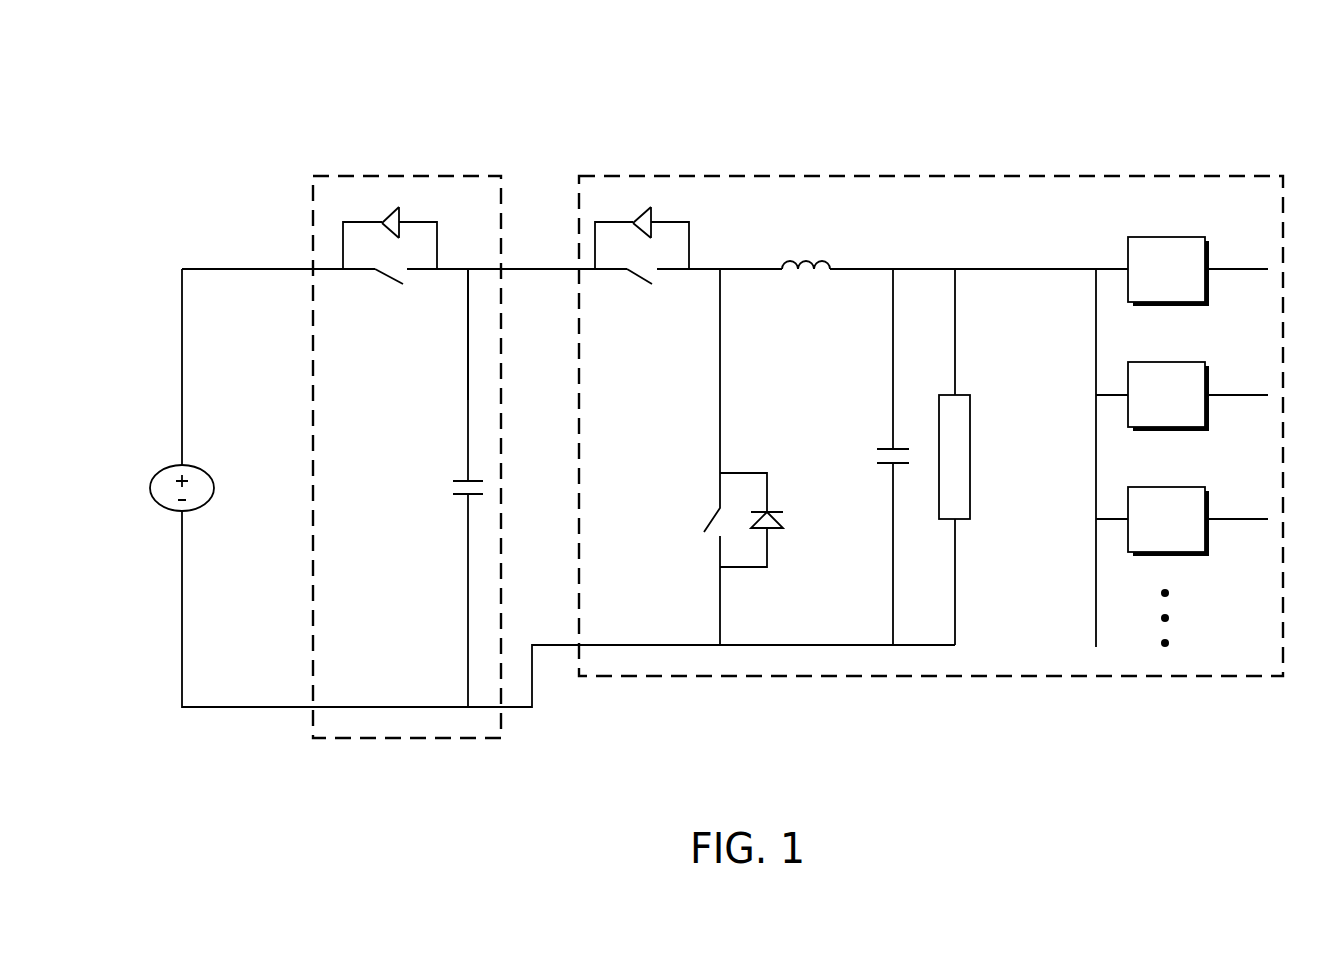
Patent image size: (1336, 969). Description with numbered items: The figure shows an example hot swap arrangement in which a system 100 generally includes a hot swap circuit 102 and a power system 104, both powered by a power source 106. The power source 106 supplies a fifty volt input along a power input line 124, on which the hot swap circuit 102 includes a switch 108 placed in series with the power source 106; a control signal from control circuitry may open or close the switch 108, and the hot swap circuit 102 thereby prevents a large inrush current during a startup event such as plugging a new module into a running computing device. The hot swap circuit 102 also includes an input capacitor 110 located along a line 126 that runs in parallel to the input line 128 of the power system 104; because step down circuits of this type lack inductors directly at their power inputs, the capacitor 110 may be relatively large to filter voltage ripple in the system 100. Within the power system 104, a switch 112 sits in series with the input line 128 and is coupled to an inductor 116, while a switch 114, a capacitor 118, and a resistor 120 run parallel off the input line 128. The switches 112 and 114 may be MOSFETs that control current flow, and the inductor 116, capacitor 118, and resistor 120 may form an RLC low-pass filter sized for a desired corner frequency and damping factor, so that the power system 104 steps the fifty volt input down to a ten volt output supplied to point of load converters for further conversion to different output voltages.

The system 100 is at (1233, 92).
The hot swap circuit 102 is at (405, 426).
The power system 104 is at (931, 395).
The power source 106 is at (190, 513).
The switch 108 is at (422, 278).
The input capacitor 110 is at (460, 474).
The switch 112 is at (675, 278).
The switch 114 is at (708, 510).
The inductor 116 is at (825, 259).
The capacitor 118 is at (878, 443).
The resistor 120 is at (965, 385).
The power input line 124 is at (190, 377).
The line 126 is at (465, 373).
The input line 128 is at (518, 276).